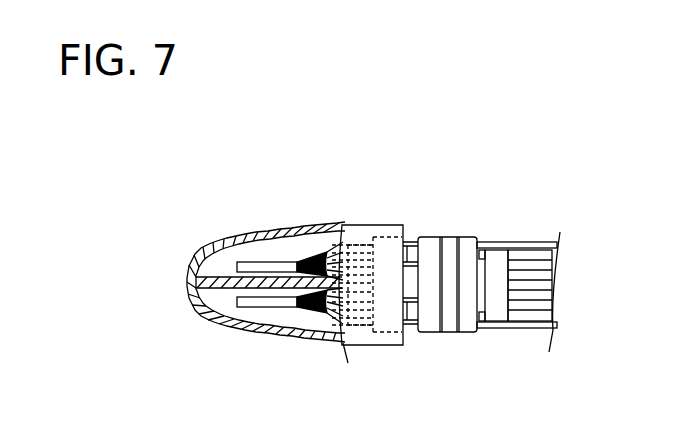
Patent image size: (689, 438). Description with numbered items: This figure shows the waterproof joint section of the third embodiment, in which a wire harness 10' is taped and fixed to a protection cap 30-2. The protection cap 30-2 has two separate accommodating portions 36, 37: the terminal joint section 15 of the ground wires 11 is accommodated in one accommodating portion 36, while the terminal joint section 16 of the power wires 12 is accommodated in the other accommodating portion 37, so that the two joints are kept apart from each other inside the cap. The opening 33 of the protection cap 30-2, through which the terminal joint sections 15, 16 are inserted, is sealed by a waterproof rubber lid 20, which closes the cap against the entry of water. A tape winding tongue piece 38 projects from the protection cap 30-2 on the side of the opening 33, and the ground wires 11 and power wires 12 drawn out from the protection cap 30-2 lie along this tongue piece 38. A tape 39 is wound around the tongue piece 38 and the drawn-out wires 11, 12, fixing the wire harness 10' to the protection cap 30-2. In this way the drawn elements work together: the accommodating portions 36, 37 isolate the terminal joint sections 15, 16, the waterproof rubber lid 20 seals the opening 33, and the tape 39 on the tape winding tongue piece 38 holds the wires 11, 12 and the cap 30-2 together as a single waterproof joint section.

The protection cap 30-2 is at (326, 220).
The accommodating portion 36 is at (222, 255).
The accommodating portion 37 is at (218, 306).
The terminal joint section 15 is at (260, 262).
The terminal joint section 16 is at (277, 306).
The opening 33 is at (407, 237).
The waterproof rubber lid 20 is at (388, 328).
The tape winding tongue piece 38 is at (410, 298).
The tape 39 is at (448, 237).
The ground wires 11 is at (523, 242).
The power wires 12 is at (517, 330).
The cable connector 10' is at (556, 243).